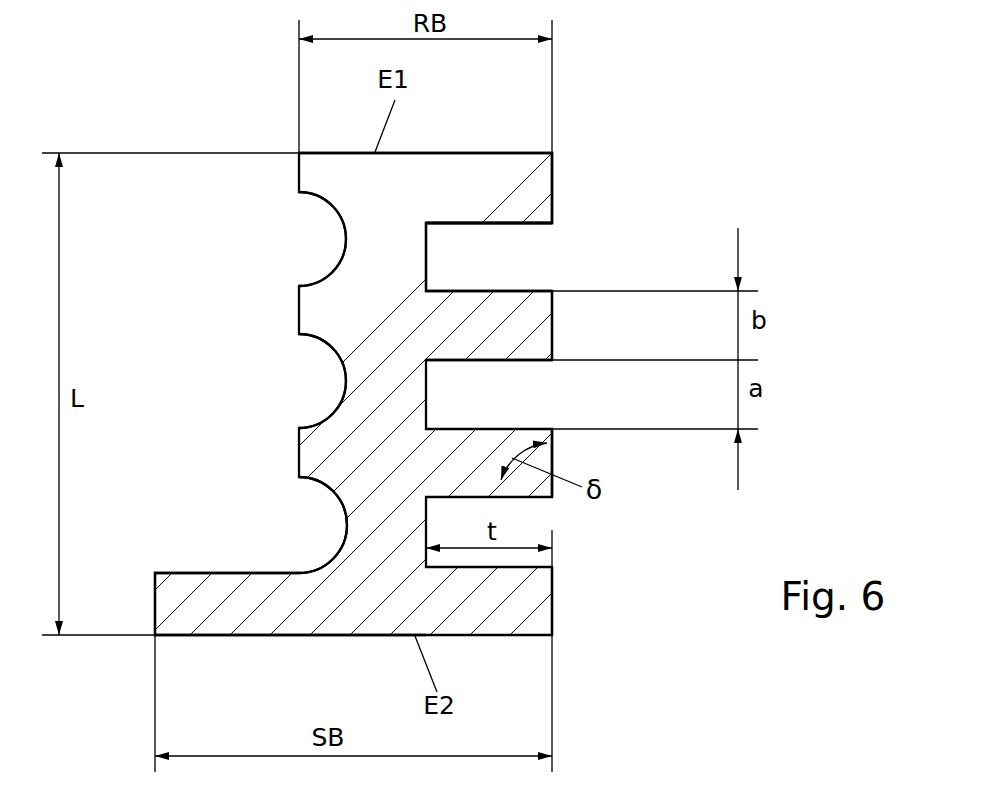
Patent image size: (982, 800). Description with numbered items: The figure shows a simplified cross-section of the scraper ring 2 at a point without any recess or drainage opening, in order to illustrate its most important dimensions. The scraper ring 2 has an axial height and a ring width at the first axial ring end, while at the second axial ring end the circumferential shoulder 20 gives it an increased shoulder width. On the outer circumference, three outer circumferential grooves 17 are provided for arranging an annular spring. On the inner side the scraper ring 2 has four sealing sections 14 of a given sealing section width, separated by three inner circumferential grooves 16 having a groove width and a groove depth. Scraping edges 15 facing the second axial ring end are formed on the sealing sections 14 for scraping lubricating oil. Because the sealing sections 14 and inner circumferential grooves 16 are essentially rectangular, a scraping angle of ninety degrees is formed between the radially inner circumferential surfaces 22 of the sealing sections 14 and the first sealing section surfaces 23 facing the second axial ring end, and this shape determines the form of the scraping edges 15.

The scraper ring 2 is at (479, 121).
The sealing section 14 is at (498, 178).
The scraping edge 15 is at (553, 223).
The inner circumferential groove 16 is at (450, 242).
The outer circumferential groove 17 is at (323, 252).
The circumferential shoulder 20 is at (223, 598).
The radially inner circumferential surface 22 is at (554, 457).
The first sealing section surface 23 is at (512, 223).